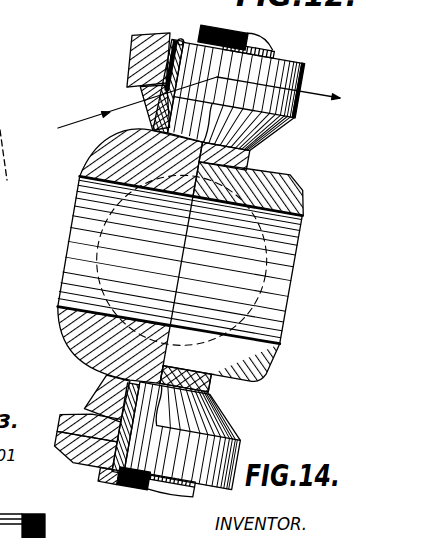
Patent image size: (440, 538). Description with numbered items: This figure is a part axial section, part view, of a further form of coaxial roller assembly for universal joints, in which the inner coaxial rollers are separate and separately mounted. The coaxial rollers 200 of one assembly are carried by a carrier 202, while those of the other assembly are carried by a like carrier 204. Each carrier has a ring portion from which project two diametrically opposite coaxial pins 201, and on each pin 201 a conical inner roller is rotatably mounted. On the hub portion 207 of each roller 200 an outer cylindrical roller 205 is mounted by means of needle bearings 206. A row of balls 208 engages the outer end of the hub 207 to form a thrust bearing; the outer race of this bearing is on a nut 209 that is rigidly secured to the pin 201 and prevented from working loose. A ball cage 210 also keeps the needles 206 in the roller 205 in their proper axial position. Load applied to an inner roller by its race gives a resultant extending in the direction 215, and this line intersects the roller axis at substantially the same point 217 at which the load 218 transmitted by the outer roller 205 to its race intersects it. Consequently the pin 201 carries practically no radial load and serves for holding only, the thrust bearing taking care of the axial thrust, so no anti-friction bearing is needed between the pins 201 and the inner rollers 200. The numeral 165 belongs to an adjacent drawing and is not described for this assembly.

The adjacent figure element 165 is at (0, 140).
The coaxial roller 200 is at (158, 115).
The pin 201 is at (143, 400).
The carrier 202 is at (113, 163).
The carrier 204 is at (272, 178).
The outer cylindrical roller 205 is at (302, 76).
The needle bearings 206 is at (102, 445).
The hub portion 207 is at (182, 62).
The row of balls 208 is at (110, 477).
The nut 209 is at (167, 490).
The ball cage 210 is at (100, 470).
The direction of resultant load 215 is at (75, 122).
The point of intersection 217 is at (217, 78).
The load 218 is at (308, 112).